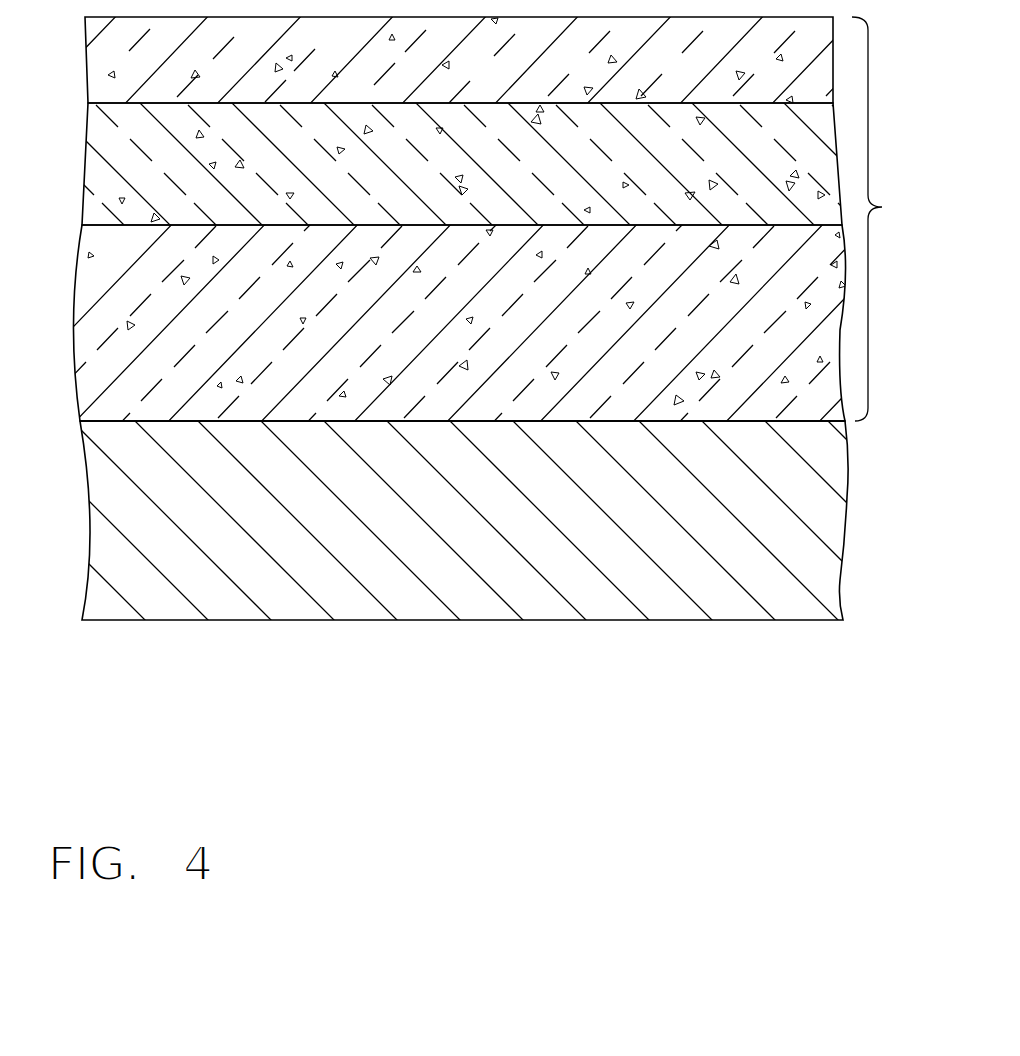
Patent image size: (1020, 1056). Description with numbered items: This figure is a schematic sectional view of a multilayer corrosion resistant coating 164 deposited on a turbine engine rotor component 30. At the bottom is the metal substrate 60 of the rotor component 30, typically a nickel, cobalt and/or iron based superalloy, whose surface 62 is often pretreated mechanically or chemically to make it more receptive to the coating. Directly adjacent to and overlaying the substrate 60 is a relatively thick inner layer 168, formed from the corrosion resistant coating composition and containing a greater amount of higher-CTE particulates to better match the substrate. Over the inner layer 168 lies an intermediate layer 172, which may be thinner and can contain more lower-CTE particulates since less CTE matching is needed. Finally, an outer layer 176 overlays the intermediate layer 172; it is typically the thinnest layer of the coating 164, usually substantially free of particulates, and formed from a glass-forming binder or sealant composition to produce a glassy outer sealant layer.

The turbine engine rotor component 30 is at (510, 353).
The metal substrate 60 is at (100, 494).
The surface 62 is at (780, 425).
The corrosion resistant coating 164 is at (510, 222).
The inner layer 168 is at (100, 327).
The intermediate layer 172 is at (116, 188).
The outer layer 176 is at (115, 73).